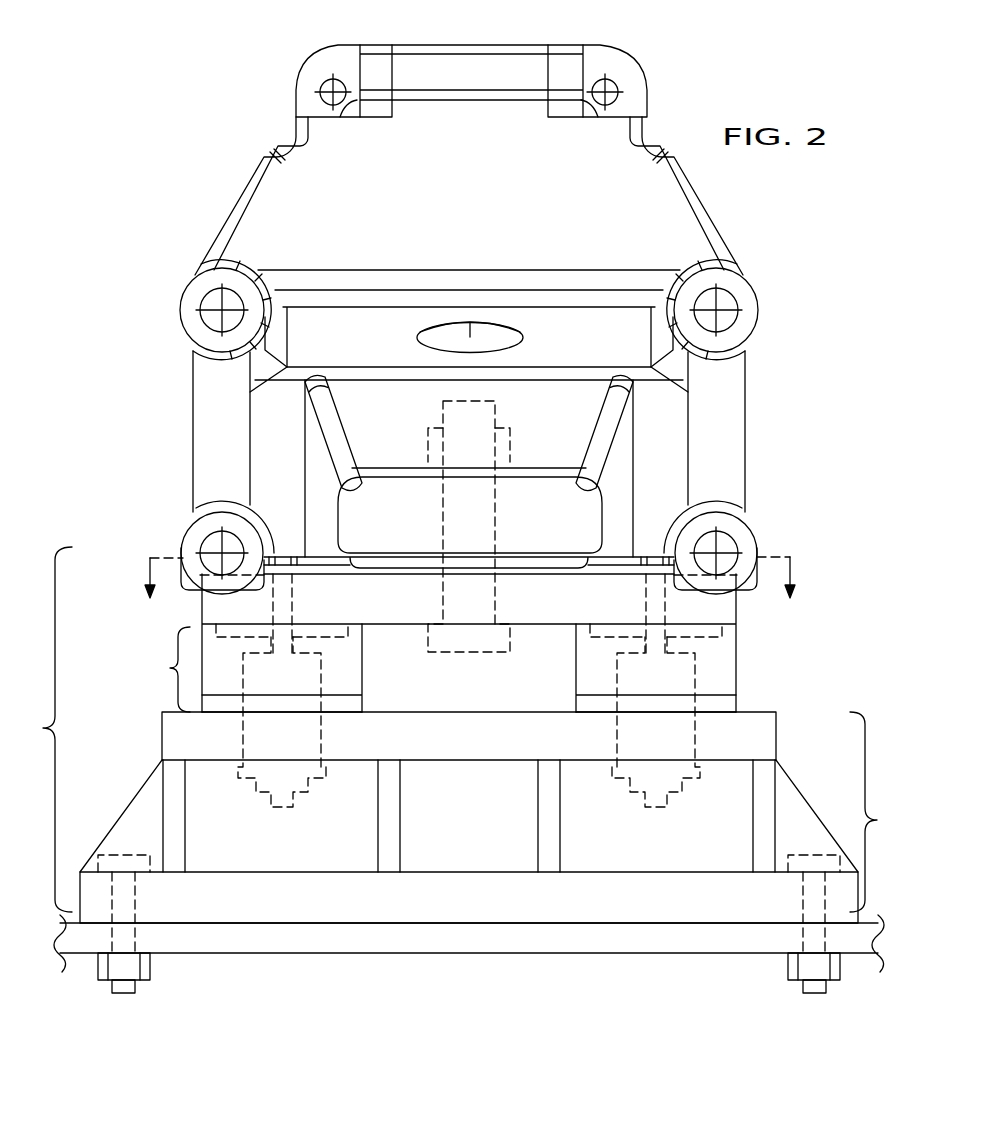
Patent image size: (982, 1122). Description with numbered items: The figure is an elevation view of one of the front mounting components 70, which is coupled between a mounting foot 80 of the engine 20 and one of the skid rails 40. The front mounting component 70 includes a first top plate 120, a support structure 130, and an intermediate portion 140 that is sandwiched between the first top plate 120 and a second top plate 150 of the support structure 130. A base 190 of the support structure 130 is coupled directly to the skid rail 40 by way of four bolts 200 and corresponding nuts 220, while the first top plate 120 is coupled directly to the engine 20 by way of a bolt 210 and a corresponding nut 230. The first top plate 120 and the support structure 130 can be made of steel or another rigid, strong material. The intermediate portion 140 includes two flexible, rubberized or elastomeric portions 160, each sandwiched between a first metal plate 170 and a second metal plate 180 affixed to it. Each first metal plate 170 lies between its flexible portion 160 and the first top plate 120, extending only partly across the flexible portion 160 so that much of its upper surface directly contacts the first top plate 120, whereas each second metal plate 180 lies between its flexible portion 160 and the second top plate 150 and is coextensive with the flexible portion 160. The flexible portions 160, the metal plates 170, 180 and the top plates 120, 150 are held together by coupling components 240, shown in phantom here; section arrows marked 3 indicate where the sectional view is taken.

The engine 20 is at (786, 396).
The mounting foot 80 is at (604, 532).
The bolt 210 is at (497, 418).
The nut 230 is at (427, 452).
The section line for FIG. 3 is at (458, 595).
The first top plate 120 is at (200, 607).
The first metal plates 170 is at (325, 624).
The flexible portions 160 is at (362, 668).
The intermediate portion 140 is at (159, 669).
The second metal plates 180 is at (345, 714).
The coupling components 240 is at (243, 741).
The support structure 130 is at (500, 866).
The second top plate 150 is at (777, 737).
The base 190 is at (328, 908).
The bolts 200 is at (137, 899).
The nuts 220 is at (95, 970).
The skid rails 40 is at (345, 956).
The front mounting components 70 is at (38, 729).